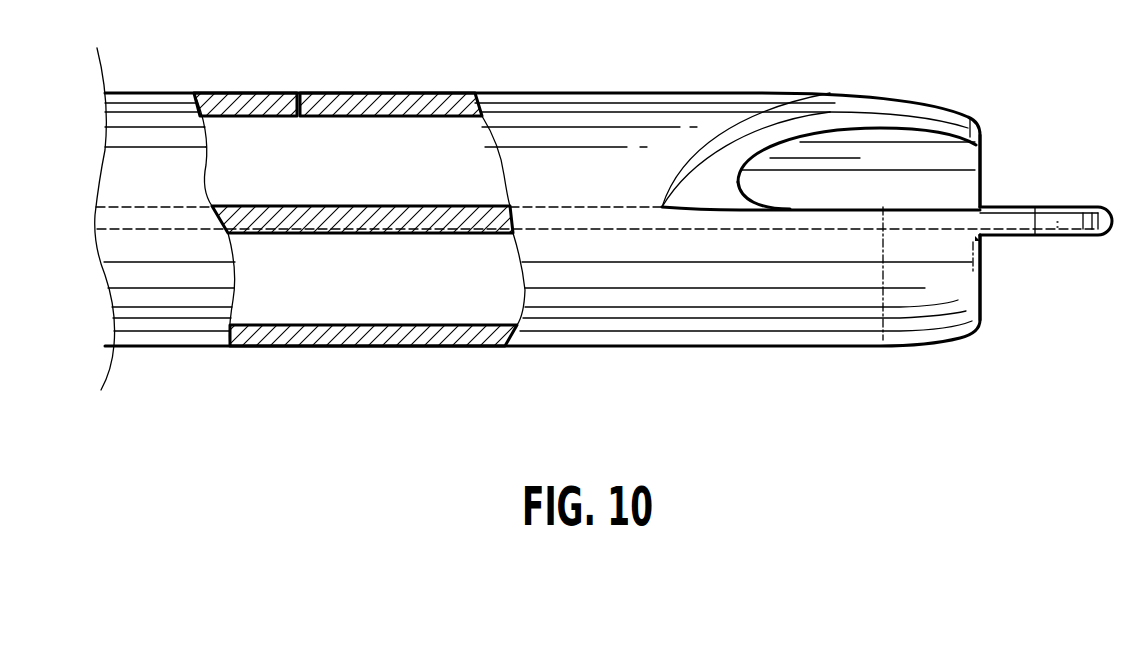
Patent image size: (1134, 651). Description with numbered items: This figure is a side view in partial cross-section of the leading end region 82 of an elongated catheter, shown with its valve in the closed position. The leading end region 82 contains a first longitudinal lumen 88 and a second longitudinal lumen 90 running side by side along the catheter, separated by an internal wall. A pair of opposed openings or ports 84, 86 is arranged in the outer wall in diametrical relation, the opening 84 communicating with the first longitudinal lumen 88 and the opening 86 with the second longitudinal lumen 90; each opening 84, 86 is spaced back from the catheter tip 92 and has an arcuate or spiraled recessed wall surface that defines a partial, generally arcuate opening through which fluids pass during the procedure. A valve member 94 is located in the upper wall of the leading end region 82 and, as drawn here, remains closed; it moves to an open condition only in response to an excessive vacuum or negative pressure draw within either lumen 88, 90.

The leading end region 82 is at (247, 86).
The opening 84 is at (890, 157).
The opening 86 is at (983, 277).
The first longitudinal lumen 88 is at (376, 150).
The second longitudinal lumen 90 is at (380, 305).
The catheter tip 92 is at (1050, 213).
The valve member 94 is at (336, 93).